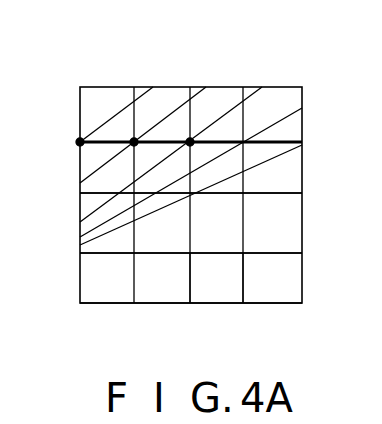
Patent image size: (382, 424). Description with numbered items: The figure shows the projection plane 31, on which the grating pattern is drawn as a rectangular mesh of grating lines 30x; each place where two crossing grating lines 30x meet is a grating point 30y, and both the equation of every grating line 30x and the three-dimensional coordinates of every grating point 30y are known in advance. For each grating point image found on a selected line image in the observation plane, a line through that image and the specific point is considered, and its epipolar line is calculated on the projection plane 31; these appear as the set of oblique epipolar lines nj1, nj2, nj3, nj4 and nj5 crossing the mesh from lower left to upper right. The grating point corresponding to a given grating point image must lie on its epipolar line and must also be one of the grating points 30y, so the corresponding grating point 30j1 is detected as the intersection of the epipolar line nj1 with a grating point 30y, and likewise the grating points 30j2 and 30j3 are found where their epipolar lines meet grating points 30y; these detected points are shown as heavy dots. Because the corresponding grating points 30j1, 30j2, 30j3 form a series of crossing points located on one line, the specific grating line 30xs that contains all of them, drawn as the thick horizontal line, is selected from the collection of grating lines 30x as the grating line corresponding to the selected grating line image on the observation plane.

The projection plane 31 is at (108, 300).
The grating line 30x is at (303, 224).
The grating point 30y is at (190, 255).
The specific grating line 30xs is at (277, 137).
The grating point 30j1 is at (78, 141).
The grating point 30j2 is at (133, 136).
The grating point 30j3 is at (190, 137).
The epipolar line nj1 is at (107, 118).
The epipolar line nj2 is at (167, 114).
The epipolar line nj3 is at (232, 107).
The epipolar line nj4 is at (273, 120).
The epipolar line nj5 is at (270, 162).